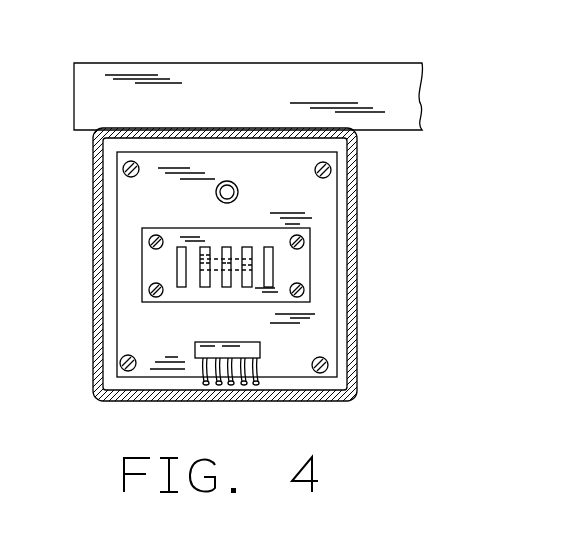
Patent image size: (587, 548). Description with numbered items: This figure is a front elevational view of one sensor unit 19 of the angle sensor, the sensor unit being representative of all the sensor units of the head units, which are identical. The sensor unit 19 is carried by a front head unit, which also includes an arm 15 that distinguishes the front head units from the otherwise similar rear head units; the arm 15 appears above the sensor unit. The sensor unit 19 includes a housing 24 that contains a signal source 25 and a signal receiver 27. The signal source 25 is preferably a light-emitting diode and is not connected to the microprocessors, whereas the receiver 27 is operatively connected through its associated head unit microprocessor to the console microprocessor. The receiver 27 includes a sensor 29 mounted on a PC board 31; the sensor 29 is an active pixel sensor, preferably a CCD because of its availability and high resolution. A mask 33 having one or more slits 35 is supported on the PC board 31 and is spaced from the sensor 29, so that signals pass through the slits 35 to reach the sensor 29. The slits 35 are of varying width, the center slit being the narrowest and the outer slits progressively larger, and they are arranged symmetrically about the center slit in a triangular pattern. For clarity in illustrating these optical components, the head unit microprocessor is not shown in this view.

The arm 15 is at (382, 63).
The sensor unit 19 is at (228, 222).
The housing 24 is at (93, 165).
The signal source 25 is at (232, 181).
The receiver 27 is at (290, 219).
The sensor 29 is at (252, 267).
The PC board 31 is at (128, 228).
The mask 33 is at (223, 259).
The slits 35 is at (233, 258).